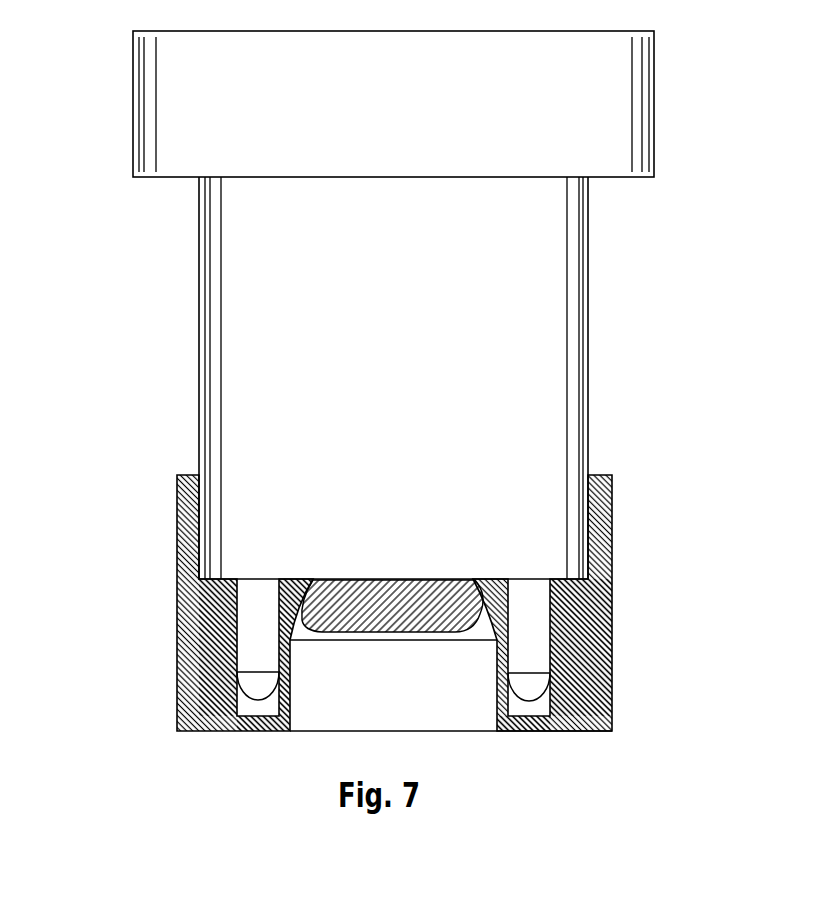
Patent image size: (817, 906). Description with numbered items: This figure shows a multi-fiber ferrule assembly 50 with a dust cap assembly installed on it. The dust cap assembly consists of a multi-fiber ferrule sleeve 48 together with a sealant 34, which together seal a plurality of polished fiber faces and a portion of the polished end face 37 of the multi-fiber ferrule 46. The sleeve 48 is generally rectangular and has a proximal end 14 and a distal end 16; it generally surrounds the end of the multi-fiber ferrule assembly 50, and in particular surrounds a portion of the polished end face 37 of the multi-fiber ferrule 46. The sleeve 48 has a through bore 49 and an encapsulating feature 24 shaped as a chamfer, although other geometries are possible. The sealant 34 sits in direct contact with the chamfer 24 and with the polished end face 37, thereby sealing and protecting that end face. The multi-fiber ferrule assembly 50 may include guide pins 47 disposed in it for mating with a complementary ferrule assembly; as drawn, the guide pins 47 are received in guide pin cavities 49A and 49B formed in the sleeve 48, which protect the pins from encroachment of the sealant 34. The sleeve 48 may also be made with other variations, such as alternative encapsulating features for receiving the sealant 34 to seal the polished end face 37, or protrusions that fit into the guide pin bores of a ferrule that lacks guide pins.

The multi-fiber ferrule assembly 50 is at (739, 104).
The multi-fiber ferrule 46 is at (537, 342).
The proximal end 14 is at (597, 473).
The multi-fiber ferrule polished end face 37 is at (222, 587).
The multi-fiber ferrule sleeve 48 is at (587, 645).
The encapsulating feature 24 is at (305, 623).
The sealant 34 is at (480, 603).
The through bore 49 is at (410, 710).
The guide pins 47 is at (257, 687).
The guide pin cavity 49A is at (267, 707).
The guide pin cavity 49B is at (542, 703).
The distal end 16 is at (545, 733).